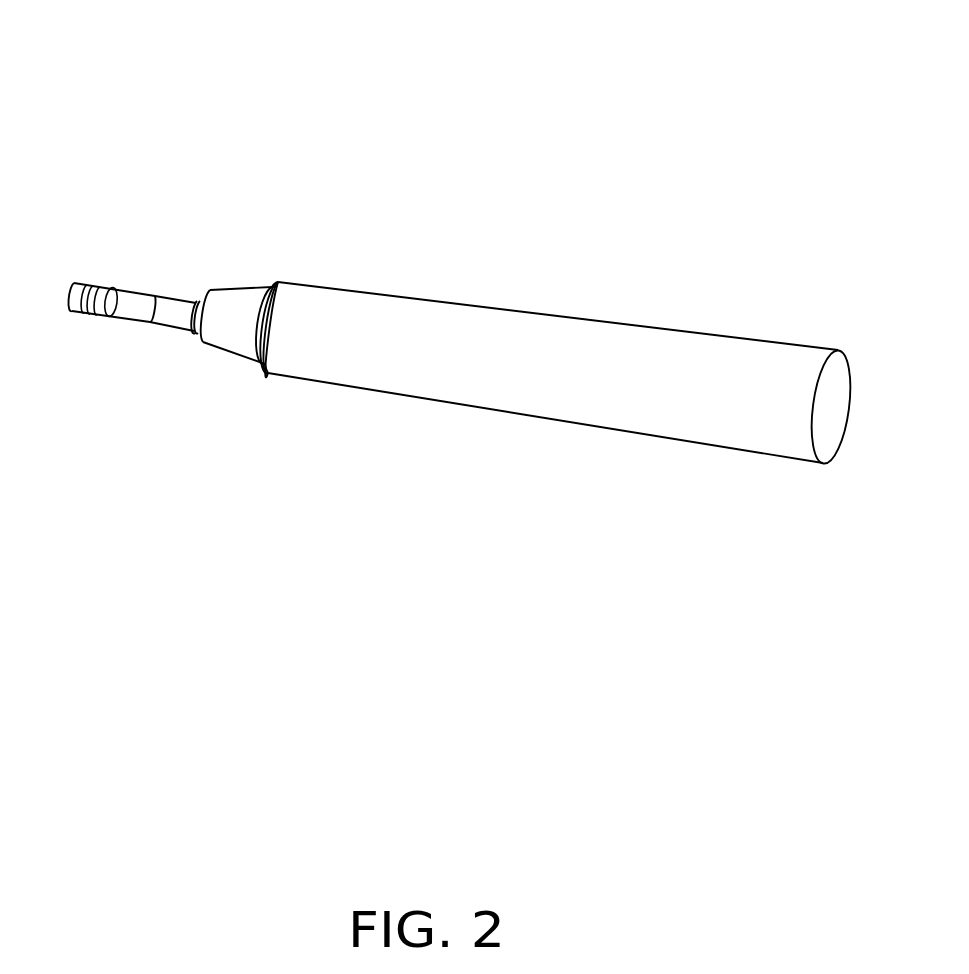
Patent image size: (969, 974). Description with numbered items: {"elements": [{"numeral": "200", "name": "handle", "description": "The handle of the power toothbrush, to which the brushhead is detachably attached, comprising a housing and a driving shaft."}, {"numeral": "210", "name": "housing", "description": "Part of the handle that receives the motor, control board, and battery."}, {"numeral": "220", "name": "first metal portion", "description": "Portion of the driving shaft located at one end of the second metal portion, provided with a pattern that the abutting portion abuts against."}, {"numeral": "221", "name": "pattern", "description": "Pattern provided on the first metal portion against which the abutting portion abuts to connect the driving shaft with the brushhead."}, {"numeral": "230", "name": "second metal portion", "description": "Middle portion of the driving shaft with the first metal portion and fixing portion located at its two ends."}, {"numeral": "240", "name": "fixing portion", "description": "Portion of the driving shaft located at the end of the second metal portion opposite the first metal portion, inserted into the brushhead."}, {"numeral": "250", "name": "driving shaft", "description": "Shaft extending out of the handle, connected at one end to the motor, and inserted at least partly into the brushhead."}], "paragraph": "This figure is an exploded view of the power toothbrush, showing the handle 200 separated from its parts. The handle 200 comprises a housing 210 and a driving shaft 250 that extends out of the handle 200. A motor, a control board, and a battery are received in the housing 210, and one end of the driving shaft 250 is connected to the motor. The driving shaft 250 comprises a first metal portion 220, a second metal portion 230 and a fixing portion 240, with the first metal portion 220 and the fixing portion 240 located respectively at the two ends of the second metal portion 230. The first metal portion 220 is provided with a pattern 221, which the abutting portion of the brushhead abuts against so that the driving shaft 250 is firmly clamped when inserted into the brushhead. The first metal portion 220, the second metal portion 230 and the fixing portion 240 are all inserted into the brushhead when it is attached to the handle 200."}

The electronic atomization device 200 is at (580, 62).
The housing tube 210 is at (603, 337).
The suction nozzle portion 220 is at (133, 297).
The grooves 221 is at (90, 313).
The connecting section 230 is at (173, 315).
The tapered connector 240 is at (225, 305).
The mouthpiece assembly 250 is at (273, 193).